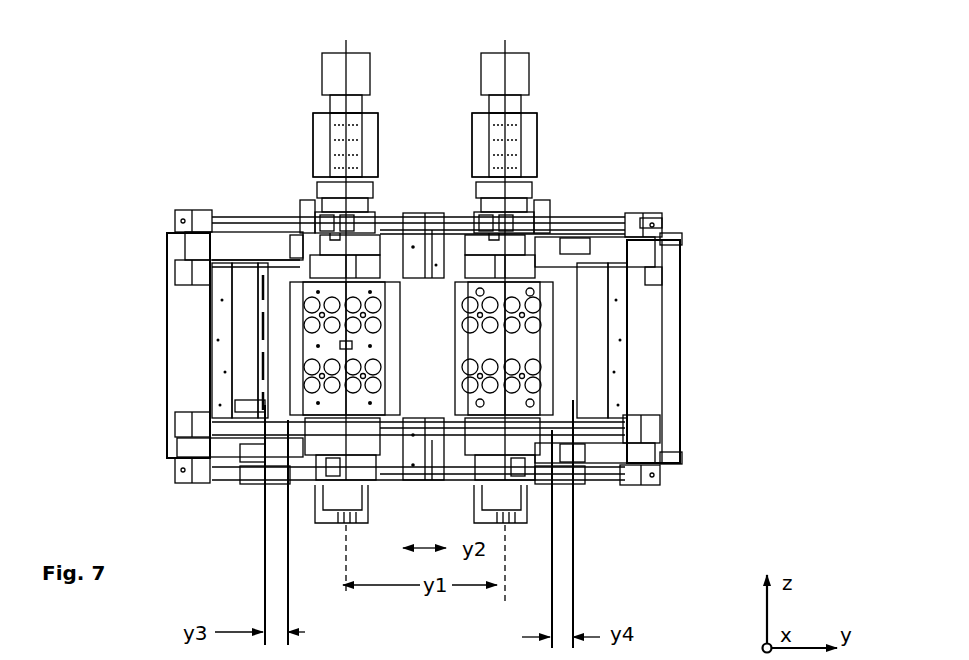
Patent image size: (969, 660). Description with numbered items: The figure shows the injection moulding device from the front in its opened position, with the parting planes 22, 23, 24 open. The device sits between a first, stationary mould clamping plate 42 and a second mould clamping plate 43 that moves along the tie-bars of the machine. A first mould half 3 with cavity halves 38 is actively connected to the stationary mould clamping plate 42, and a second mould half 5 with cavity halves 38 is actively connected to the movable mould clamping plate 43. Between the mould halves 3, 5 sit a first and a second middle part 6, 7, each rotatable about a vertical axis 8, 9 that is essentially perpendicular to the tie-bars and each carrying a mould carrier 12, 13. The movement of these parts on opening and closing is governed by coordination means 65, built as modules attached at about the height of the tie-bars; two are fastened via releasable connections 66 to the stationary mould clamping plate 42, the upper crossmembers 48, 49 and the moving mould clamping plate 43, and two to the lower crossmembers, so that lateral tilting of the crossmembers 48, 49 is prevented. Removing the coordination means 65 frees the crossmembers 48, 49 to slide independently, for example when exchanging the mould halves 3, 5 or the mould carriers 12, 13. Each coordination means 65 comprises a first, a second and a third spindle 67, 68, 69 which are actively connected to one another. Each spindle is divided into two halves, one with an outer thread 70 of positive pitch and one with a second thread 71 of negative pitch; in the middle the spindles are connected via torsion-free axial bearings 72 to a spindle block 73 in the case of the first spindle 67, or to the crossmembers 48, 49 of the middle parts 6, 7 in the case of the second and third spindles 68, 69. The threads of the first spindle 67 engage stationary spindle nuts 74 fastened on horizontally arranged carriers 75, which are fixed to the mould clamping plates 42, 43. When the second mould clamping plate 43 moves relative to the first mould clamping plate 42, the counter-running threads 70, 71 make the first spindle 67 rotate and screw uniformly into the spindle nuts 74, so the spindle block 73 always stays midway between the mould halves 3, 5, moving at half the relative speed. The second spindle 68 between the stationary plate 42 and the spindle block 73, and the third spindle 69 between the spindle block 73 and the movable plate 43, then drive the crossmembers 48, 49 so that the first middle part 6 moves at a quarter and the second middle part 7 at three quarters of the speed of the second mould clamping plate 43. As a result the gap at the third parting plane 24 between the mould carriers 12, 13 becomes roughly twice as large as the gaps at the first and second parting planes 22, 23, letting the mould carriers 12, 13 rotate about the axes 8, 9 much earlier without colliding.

The first mould half 3 is at (600, 335).
The second mould half 5 is at (287, 348).
The first middle part 6 is at (378, 45).
The second middle part 7 is at (543, 80).
The vertical axis 8 is at (346, 53).
The vertical axis 9 is at (506, 53).
The first mould carrier 12 is at (270, 350).
The second mould carrier 13 is at (565, 365).
The first parting plane 22 is at (655, 268).
The second parting plane 23 is at (277, 373).
The third parting plane 24 is at (530, 195).
The cavity halves 38 is at (177, 272).
The first stationary mould clamping plate 42 is at (653, 300).
The second mould clamping plate 43 is at (178, 303).
The crossmember 48 is at (373, 460).
The crossmember 49 is at (313, 213).
The coordination means 65 is at (648, 218).
The releasable connections 66 is at (218, 448).
The first spindle 67 is at (318, 208).
The second spindle 68 is at (297, 208).
The third spindle 69 is at (677, 202).
The outer thread 70 is at (264, 218).
The second thread 71 is at (548, 222).
The torsion-free axial bearing 72 is at (590, 245).
The spindle block 73 is at (435, 213).
The spindle nut 74 is at (415, 217).
The carrier 75 is at (175, 230).